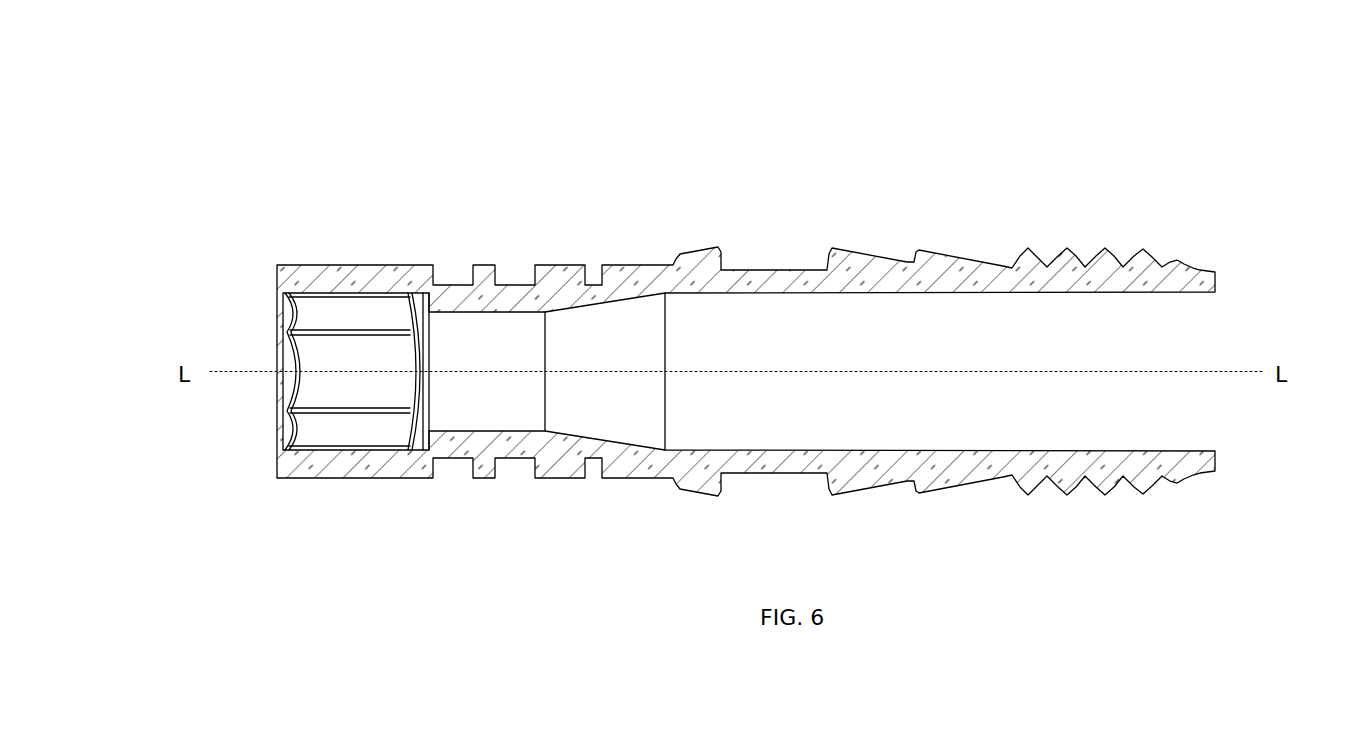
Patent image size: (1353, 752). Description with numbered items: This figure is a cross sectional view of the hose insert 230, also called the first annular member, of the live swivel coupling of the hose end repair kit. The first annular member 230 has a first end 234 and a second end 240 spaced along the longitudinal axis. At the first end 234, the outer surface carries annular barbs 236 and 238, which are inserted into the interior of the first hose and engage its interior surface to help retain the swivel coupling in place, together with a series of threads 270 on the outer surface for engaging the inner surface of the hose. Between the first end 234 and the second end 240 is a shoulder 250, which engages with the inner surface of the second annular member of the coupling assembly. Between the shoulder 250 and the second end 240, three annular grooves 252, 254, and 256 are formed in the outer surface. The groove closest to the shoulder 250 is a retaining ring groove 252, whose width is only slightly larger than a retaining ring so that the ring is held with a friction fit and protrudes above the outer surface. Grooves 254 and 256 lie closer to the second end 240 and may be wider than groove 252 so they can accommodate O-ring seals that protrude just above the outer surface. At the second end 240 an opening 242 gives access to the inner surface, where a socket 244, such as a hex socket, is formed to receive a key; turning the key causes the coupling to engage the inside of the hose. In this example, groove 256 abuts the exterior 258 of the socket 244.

The hose insert 230 is at (781, 230).
The first end portion 234 is at (1205, 265).
The annular barb 236 is at (928, 242).
The annular barb 238 is at (843, 250).
The second end portion 240 is at (282, 263).
The opening 242 is at (277, 397).
The socket 244 is at (342, 393).
The shoulder 250 is at (700, 250).
The retaining ring groove 252 is at (593, 268).
The groove 254 is at (512, 265).
The groove 256 is at (453, 265).
The exterior of socket 258 is at (355, 265).
The threads 270 is at (1110, 232).